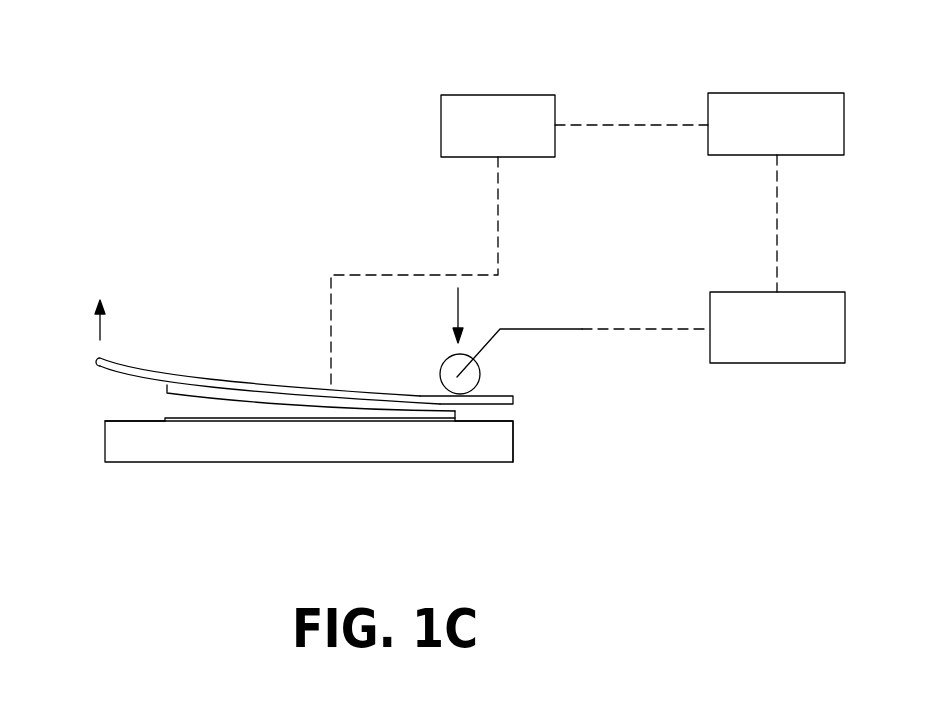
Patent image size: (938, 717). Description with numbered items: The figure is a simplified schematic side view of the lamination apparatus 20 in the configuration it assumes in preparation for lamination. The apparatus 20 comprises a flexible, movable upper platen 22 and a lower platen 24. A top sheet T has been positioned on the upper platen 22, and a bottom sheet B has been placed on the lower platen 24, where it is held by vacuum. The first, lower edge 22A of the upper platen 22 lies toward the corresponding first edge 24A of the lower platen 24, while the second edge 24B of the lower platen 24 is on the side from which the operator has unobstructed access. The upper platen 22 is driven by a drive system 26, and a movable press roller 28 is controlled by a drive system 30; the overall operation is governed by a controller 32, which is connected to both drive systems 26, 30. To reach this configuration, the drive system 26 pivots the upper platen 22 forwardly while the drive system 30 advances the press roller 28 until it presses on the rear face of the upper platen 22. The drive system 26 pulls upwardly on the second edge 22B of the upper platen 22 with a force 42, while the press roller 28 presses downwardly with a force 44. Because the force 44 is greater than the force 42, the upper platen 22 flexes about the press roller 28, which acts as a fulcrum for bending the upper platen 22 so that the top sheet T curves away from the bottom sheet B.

The apparatus 20 is at (188, 88).
The upper platen 22 is at (167, 390).
The first edge of upper platen 22A is at (500, 395).
The second edge of upper platen 22B is at (123, 363).
The lower platen 24 is at (368, 443).
The first edge of lower platen 24A is at (513, 422).
The second edge of lower platen 24B is at (133, 422).
The drive system 26 is at (517, 103).
The press roller 28 is at (458, 360).
The drive system 30 is at (803, 297).
The controller 32 is at (750, 113).
The force 42 is at (100, 330).
The force 44 is at (463, 313).
The top sheet T is at (272, 408).
The bottom sheet B is at (194, 408).